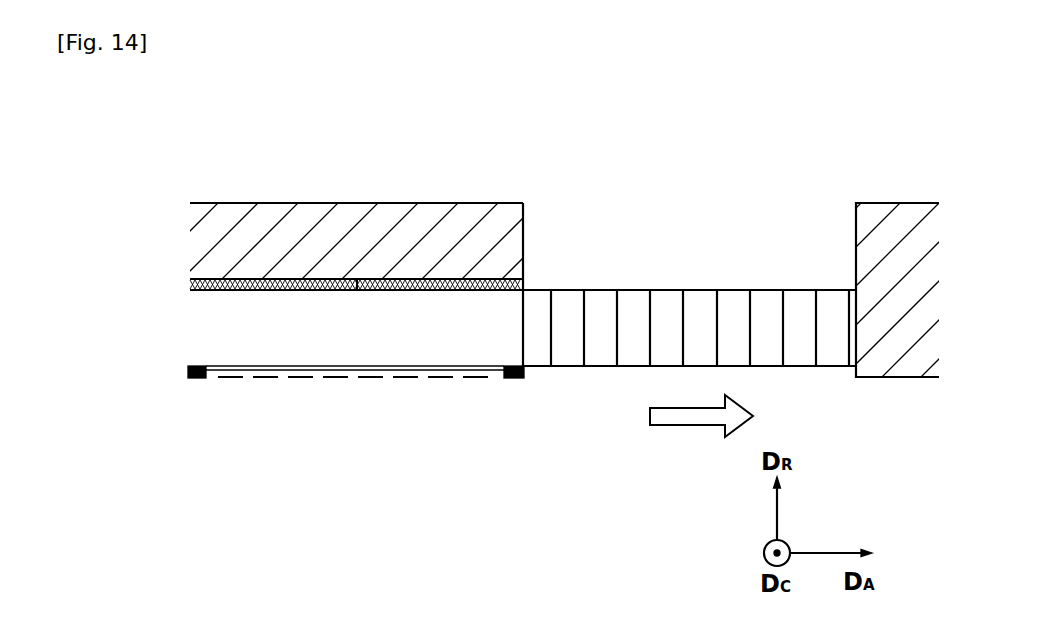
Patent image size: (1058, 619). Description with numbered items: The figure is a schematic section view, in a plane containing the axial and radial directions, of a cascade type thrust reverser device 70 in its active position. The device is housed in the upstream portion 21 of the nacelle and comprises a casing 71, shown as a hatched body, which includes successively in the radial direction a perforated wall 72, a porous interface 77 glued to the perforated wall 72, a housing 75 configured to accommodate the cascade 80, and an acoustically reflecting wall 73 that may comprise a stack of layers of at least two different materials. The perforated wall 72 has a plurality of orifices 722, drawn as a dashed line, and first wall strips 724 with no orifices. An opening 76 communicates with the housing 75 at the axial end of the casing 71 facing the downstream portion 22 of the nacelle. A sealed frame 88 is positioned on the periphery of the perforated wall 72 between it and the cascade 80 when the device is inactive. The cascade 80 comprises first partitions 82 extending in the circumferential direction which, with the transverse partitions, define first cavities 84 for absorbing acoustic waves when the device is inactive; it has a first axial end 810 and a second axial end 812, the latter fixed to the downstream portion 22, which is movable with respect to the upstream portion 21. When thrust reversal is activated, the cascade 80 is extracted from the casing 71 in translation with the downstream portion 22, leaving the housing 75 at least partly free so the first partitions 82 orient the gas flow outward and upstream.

The thrust reverser device 70 is at (361, 184).
The upstream portion 21 is at (498, 216).
The downstream portion 22 is at (898, 222).
The casing 71 is at (197, 244).
The acoustically reflecting wall 73 is at (203, 287).
The housing 75 is at (307, 320).
The opening 76 is at (511, 322).
The porous interface 77 is at (216, 365).
The perforated wall 72 is at (215, 378).
The orifices 722 is at (468, 378).
The first wall strips 724 is at (318, 378).
The sealed frame 88 is at (190, 372).
The cascade 80 is at (753, 270).
The first partitions 82 is at (683, 308).
The first cavities 84 is at (635, 349).
The first axial end 810 is at (541, 277).
The second axial end 812 is at (844, 279).